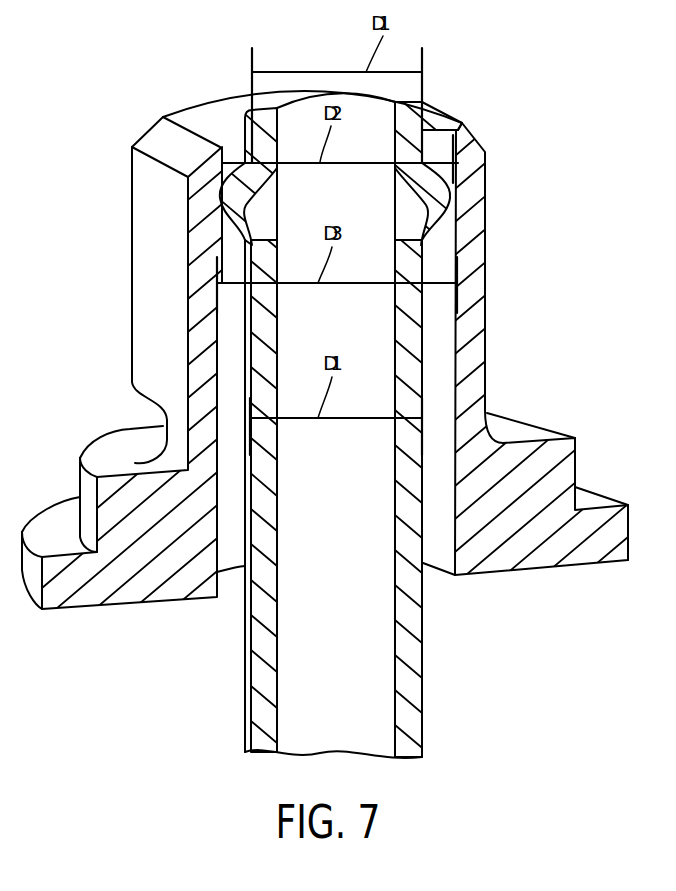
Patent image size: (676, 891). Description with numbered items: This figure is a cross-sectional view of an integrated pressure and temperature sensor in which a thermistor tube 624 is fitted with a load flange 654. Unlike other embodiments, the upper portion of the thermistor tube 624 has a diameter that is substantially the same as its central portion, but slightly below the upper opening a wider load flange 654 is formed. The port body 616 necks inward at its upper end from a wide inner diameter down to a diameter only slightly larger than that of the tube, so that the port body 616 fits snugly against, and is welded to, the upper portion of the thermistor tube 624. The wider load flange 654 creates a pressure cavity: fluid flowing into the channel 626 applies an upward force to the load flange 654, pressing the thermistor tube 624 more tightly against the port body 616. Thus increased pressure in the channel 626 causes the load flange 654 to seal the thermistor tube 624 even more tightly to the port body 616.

The port body 616 is at (486, 303).
The thermistor tube 624 is at (422, 100).
The load flange 654 is at (450, 179).
The channel 626 is at (232, 578).